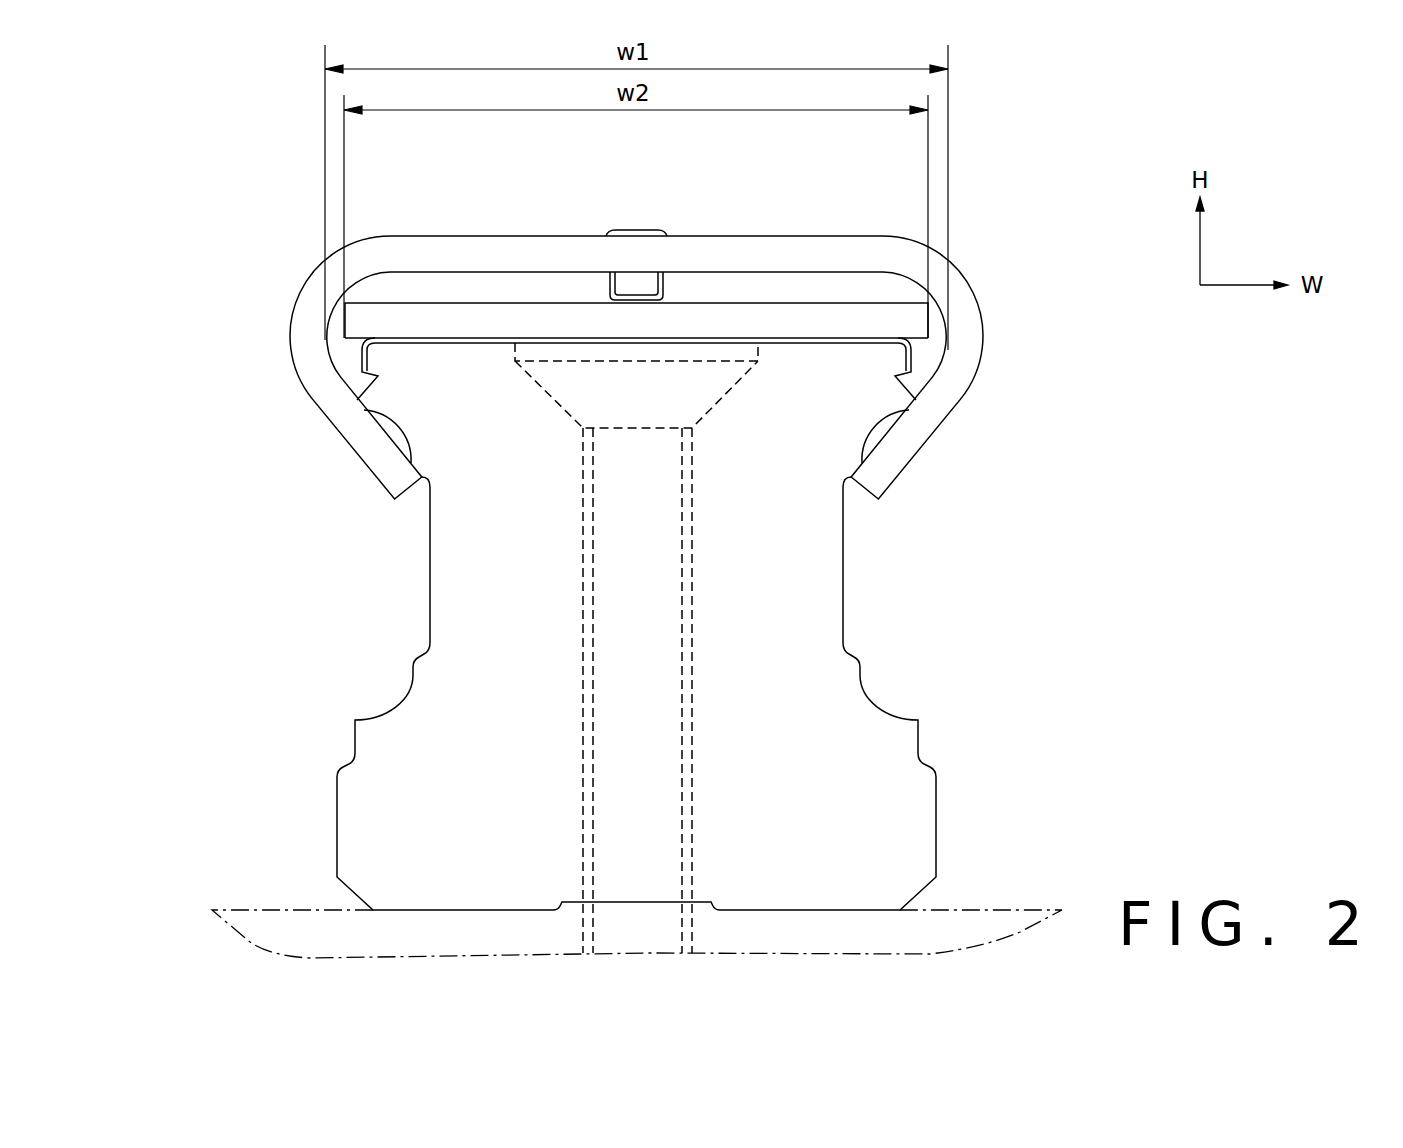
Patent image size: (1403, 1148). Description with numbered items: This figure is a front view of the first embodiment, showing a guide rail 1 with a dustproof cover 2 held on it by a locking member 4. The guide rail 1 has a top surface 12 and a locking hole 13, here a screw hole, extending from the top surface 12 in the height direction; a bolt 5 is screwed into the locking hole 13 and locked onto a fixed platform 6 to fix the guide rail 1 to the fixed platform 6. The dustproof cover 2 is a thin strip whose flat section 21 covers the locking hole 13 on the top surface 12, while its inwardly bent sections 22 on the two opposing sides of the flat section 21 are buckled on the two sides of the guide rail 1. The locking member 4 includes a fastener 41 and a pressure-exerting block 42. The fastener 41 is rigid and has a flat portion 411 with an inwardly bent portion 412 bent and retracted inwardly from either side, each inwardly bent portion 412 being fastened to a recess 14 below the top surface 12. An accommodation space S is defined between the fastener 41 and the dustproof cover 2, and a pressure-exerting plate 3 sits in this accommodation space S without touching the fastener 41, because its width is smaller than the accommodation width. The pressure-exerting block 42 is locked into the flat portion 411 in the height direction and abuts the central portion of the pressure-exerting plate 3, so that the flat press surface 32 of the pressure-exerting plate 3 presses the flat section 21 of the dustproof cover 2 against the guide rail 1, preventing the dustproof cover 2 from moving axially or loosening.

The guide rail 1 is at (412, 718).
The top surface 12 is at (489, 345).
The locking hole 13 is at (693, 572).
The recess 14 is at (855, 508).
The dustproof cover 2 is at (245, 290).
The flat section 21 is at (415, 342).
The inwardly bent sections 22 is at (362, 362).
The pressure-exerting plate 3 is at (913, 322).
The flat press surface 32 is at (823, 330).
The locking member 4 is at (550, 165).
The fastener 41 is at (507, 197).
The flat portion 411 is at (516, 258).
The inwardly bent portion 412 is at (372, 455).
The pressure-exerting block 42 is at (618, 288).
The bolt 5 is at (640, 612).
The fixed platform 6 is at (988, 908).
The accommodation space S is at (760, 290).